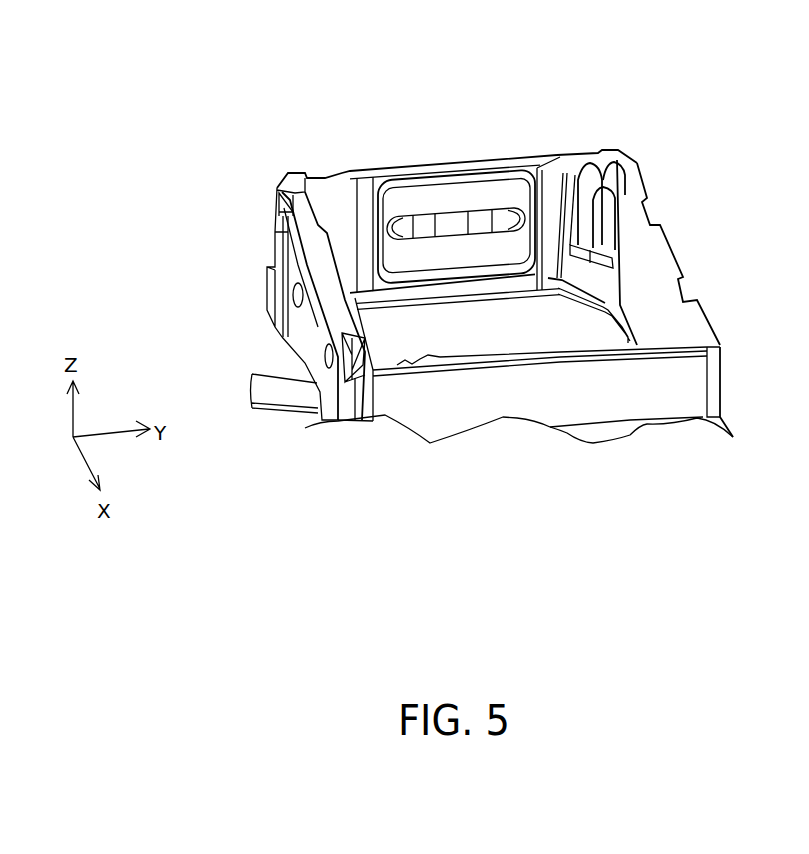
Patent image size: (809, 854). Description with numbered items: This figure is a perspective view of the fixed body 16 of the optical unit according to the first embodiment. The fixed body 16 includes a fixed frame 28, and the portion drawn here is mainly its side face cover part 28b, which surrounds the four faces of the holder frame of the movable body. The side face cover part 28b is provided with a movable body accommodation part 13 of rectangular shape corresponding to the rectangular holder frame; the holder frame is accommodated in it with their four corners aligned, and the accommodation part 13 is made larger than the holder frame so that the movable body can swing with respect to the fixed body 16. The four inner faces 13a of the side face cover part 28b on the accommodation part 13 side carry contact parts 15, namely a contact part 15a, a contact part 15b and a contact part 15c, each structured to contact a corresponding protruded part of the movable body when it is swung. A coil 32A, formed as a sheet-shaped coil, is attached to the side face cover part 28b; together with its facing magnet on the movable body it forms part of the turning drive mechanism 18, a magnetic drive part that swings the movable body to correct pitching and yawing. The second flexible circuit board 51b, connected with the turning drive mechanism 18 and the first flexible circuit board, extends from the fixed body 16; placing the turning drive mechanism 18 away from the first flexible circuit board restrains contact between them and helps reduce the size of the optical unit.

The fixed body 16 is at (721, 97).
The movable body accommodation part 13 is at (541, 298).
The inner faces 13a is at (616, 214).
The contact parts 15 is at (424, 290).
The contact part 15a is at (336, 211).
The contact part 15b is at (537, 205).
The contact part 15c is at (636, 255).
The turning drive mechanism 18 is at (404, 149).
The fixed frame 28 is at (188, 239).
The side face cover part 28b is at (275, 191).
The coil 32A is at (468, 200).
The second flexible circuit board 51b is at (284, 392).